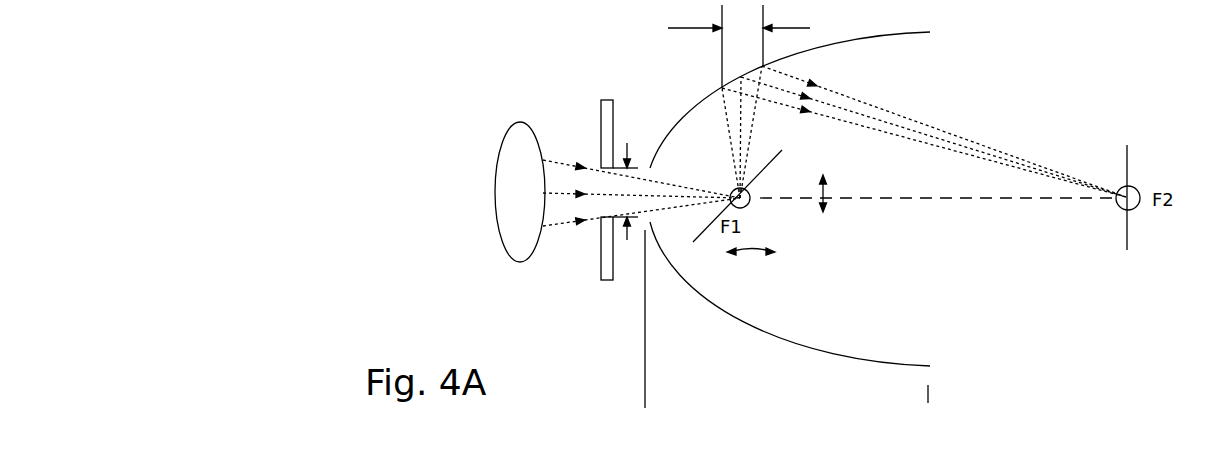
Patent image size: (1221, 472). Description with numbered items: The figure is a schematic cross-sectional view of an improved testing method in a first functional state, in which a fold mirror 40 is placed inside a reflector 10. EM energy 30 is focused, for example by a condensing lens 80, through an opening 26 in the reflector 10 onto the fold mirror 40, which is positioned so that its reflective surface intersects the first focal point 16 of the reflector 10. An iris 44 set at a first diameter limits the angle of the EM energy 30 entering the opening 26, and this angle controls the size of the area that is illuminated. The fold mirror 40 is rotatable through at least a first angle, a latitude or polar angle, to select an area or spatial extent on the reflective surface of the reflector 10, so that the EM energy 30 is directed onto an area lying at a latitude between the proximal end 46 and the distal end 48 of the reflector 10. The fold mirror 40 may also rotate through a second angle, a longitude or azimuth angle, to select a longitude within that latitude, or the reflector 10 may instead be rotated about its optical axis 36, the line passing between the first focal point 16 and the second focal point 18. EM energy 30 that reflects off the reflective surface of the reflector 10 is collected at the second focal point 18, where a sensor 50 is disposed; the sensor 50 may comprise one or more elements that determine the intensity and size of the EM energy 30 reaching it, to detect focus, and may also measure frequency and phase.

The reflector 10 is at (993, 59).
The first focal point F1 16 is at (746, 212).
The second focal point F2 18 is at (1120, 206).
The opening 26 is at (687, 166).
The EM energy 30 is at (565, 136).
The optical axis 36 is at (860, 198).
The fold mirror 40 is at (770, 168).
The iris 44 is at (613, 108).
The proximal end 46 is at (643, 333).
The distal end 48 is at (926, 411).
The sensor 50 is at (1127, 155).
The condensing lens 80 is at (520, 122).